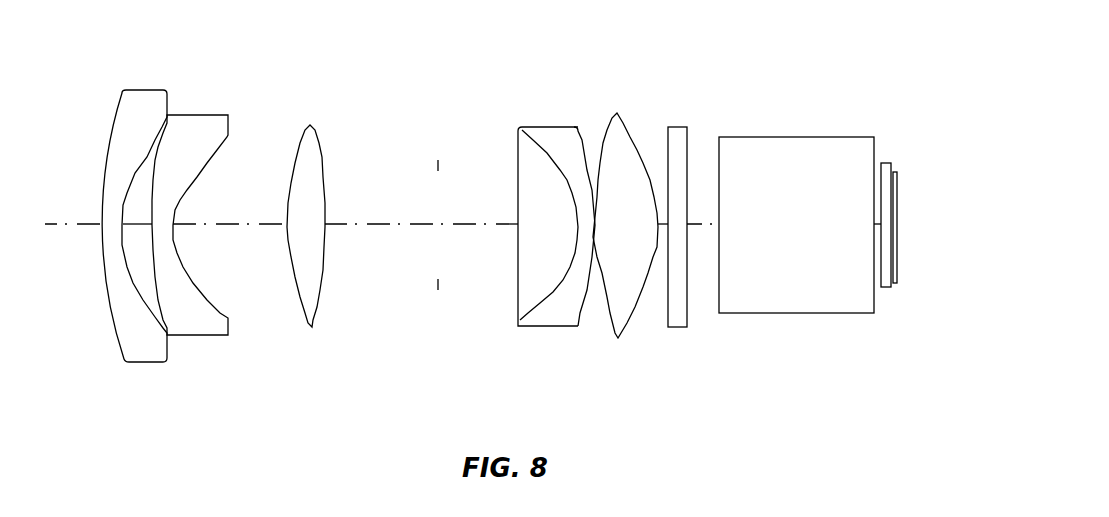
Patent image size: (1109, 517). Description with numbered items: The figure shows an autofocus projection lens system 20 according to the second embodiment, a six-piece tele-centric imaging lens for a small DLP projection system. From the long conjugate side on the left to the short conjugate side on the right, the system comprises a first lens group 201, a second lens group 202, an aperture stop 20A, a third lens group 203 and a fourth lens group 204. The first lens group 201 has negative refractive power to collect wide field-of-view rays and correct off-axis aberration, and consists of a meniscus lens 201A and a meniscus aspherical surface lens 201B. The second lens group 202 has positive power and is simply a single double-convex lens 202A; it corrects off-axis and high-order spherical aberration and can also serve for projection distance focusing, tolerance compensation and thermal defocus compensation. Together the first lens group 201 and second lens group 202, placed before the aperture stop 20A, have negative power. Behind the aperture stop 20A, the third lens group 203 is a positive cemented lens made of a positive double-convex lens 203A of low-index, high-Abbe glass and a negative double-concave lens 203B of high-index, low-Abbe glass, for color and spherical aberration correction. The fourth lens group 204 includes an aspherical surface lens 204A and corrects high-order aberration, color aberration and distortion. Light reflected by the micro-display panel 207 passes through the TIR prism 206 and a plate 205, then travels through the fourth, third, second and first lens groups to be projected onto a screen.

The projection lens system 20 is at (502, 222).
The aperture stop 20A is at (438, 317).
The first lens group 201 is at (167, 222).
The meniscus lens 201A is at (147, 364).
The meniscus aspherical surface lens 201B is at (198, 337).
The second lens group 202 is at (336, 218).
The double-convex lens 202A is at (311, 329).
The third lens group 203 is at (544, 231).
The positive double-convex lens 203A is at (520, 328).
The negative double-concave lens 203B is at (552, 328).
The fourth lens group 204 is at (646, 225).
The aspherical surface lens 204A is at (617, 341).
The plate 205 is at (678, 329).
The TIR prism 206 is at (797, 315).
The micro-display panel 207 is at (895, 285).